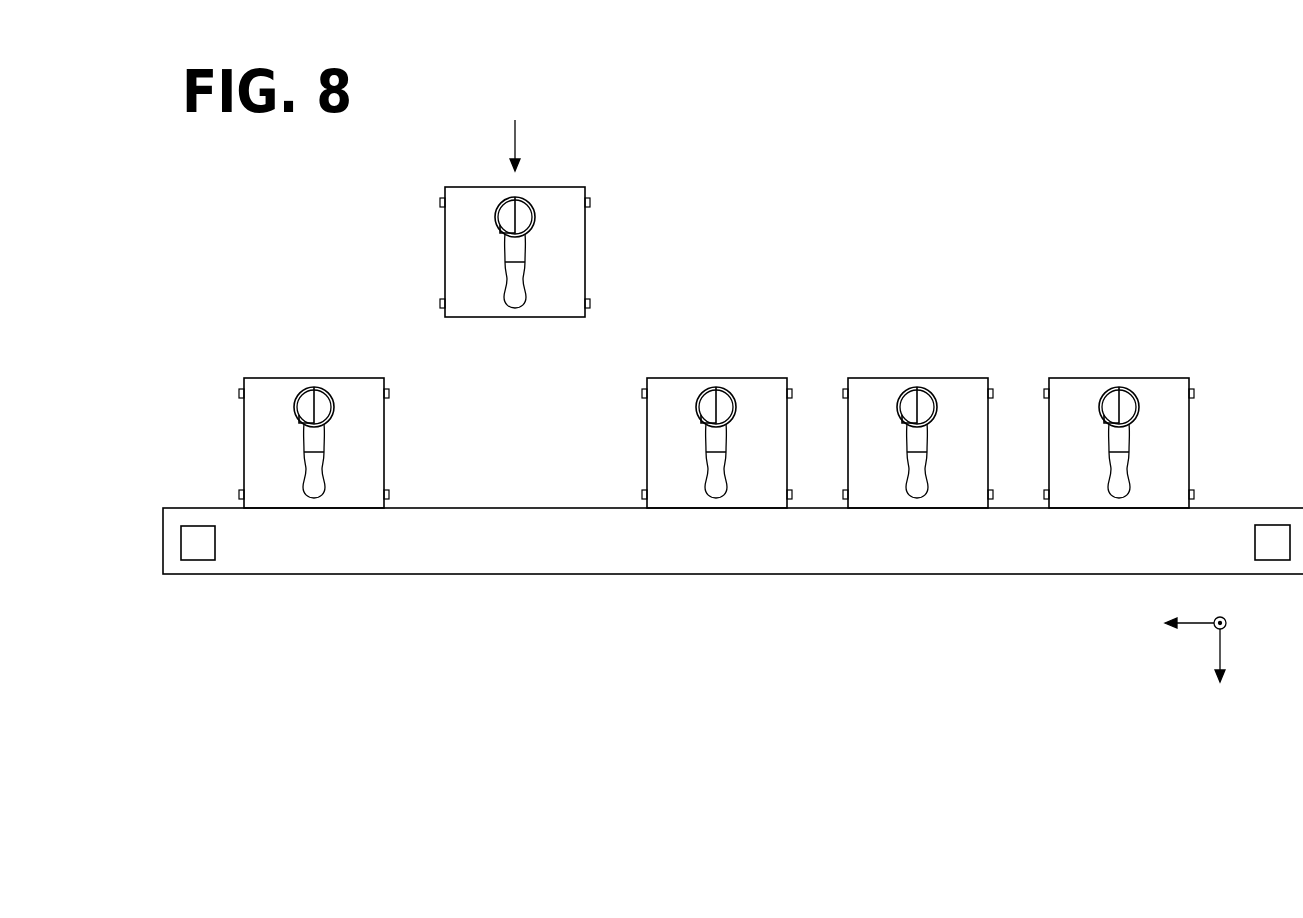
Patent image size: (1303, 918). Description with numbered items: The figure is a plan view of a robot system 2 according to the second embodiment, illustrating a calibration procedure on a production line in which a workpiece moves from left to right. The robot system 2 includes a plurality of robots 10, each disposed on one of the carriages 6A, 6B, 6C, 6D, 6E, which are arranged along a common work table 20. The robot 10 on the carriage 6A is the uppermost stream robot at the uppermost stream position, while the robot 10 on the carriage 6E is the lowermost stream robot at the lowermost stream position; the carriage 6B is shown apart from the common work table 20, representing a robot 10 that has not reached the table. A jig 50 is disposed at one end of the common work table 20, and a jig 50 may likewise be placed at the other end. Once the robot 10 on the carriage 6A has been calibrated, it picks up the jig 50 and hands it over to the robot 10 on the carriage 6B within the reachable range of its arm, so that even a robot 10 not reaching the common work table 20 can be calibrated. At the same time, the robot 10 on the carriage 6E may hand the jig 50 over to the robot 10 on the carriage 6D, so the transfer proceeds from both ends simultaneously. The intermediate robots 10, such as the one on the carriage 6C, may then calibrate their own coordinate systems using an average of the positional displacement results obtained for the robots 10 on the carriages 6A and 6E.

The robot system 2 is at (1170, 186).
The carriage 6A is at (347, 378).
The carriage 6B is at (559, 187).
The carriage 6C is at (756, 378).
The carriage 6D is at (957, 378).
The carriage 6E is at (1157, 378).
The robot 10 is at (325, 436).
The common work table 20 is at (192, 508).
The jig 50 is at (217, 542).